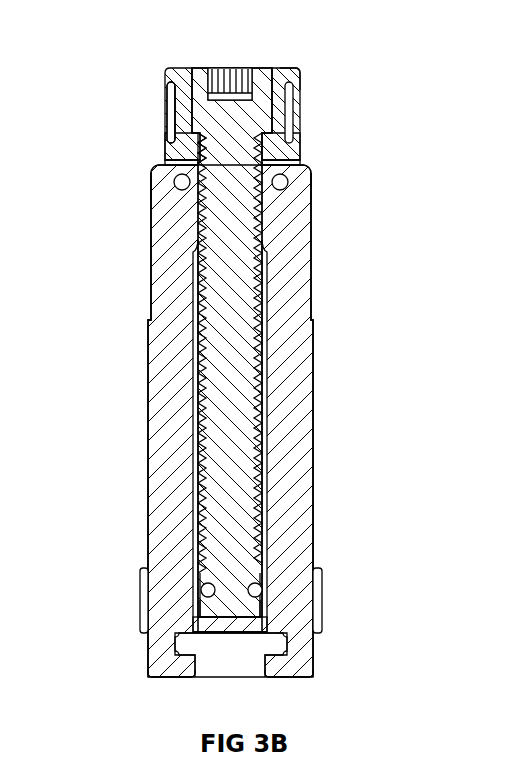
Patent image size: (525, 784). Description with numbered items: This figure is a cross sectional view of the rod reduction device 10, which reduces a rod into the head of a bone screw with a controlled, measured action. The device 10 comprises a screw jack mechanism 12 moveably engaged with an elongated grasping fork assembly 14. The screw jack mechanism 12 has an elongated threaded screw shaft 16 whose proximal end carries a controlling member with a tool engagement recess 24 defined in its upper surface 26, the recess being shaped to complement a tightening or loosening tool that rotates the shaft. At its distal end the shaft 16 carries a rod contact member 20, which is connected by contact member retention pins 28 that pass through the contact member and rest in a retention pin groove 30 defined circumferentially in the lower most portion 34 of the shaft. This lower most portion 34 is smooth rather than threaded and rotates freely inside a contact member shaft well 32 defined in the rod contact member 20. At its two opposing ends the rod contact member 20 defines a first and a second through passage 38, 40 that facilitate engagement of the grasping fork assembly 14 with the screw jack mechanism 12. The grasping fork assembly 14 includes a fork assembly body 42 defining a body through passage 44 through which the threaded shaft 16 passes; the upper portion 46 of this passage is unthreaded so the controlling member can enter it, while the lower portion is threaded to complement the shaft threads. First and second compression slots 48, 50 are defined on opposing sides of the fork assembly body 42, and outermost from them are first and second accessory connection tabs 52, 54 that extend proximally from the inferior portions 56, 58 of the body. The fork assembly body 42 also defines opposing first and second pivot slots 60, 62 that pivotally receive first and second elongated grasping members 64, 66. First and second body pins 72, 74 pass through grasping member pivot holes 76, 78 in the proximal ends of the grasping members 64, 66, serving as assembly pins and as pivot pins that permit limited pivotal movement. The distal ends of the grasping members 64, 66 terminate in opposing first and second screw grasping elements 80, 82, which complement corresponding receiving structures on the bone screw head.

The rod reduction device 10 is at (403, 243).
The screw jack mechanism 12 is at (215, 303).
The elongated grasping fork assembly 14 is at (160, 402).
The elongated threaded screw shaft 16 is at (245, 345).
The rod contact member 20 is at (143, 595).
The tool engagement recess 24 is at (233, 68).
The upper surface 26 is at (255, 70).
The contact member retention pins 28 is at (204, 594).
The retention pin groove 30 is at (197, 610).
The contact member shaft well 32 is at (258, 612).
The lower most portion 34 is at (230, 551).
The first through passage 38 is at (143, 569).
The second through passage 40 is at (322, 569).
The fork assembly body 42 is at (262, 150).
The body through passage 44 is at (196, 150).
The upper portion 46 is at (183, 97).
The first compression slot 48 is at (190, 112).
The second compression slot 50 is at (275, 120).
The first accessory connection tab 52 is at (175, 84).
The second accessory connection tab 54 is at (297, 70).
The first inferior portion 56 is at (200, 153).
The second inferior portion 58 is at (265, 160).
The first pivot slot 60 is at (192, 162).
The second pivot slot 62 is at (262, 167).
The first elongated grasping member 64 is at (153, 257).
The second elongated grasping member 66 is at (303, 247).
The first body pin 72 is at (177, 181).
The second body pin 74 is at (287, 182).
The first grasping member pivot hole 76 is at (157, 207).
The second grasping member pivot hole 78 is at (281, 187).
The first screw grasping element 80 is at (186, 679).
The second screw grasping element 82 is at (284, 680).